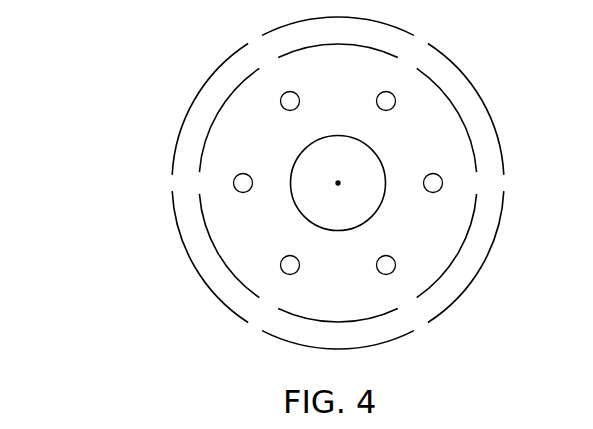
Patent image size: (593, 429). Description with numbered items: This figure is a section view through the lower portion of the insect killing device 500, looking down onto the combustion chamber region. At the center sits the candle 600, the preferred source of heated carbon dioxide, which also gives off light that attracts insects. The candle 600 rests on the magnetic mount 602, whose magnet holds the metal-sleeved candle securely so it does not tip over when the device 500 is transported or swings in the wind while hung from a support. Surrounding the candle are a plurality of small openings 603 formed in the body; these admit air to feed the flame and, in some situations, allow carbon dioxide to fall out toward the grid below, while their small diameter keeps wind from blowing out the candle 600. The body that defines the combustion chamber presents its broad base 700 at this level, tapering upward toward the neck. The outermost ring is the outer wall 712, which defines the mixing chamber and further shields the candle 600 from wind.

The insect killing device 500 is at (148, 90).
The candle 600 is at (305, 157).
The magnetic mount 602 is at (463, 210).
The openings 603 is at (268, 67).
The broad base 700 is at (452, 100).
The outer wall 712 is at (196, 270).